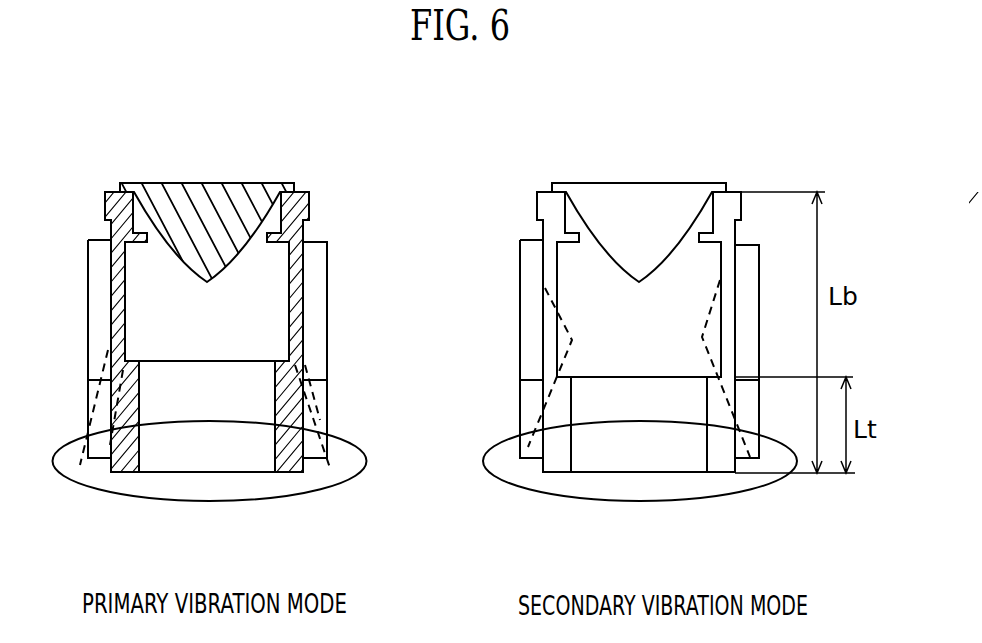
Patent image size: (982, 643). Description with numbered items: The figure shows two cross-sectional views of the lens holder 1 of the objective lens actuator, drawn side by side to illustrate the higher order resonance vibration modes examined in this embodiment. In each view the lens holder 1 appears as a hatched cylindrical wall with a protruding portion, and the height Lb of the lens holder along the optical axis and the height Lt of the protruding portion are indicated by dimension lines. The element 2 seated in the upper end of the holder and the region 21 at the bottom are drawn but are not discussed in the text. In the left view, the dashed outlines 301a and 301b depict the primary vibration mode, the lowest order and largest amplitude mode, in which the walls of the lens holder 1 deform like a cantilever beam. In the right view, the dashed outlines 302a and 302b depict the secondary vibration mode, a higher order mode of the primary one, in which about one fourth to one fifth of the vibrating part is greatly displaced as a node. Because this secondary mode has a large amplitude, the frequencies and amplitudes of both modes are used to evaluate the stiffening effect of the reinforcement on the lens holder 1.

The lens holder 1 is at (525, 262).
The diaphragm cap with conical recess 2 is at (600, 188).
The bottom opening region 21 is at (512, 440).
The primary vibration mode 301a is at (73, 458).
The primary vibration mode 301b is at (332, 467).
The secondary vibration mode 302a is at (512, 455).
The secondary vibration mode 302b is at (762, 460).